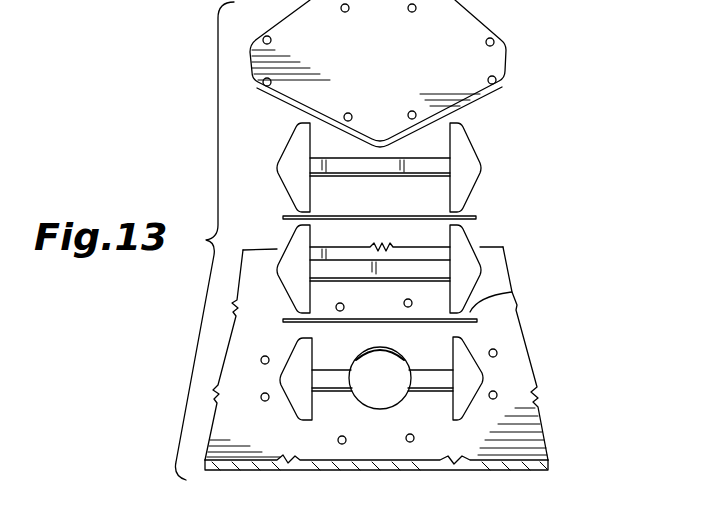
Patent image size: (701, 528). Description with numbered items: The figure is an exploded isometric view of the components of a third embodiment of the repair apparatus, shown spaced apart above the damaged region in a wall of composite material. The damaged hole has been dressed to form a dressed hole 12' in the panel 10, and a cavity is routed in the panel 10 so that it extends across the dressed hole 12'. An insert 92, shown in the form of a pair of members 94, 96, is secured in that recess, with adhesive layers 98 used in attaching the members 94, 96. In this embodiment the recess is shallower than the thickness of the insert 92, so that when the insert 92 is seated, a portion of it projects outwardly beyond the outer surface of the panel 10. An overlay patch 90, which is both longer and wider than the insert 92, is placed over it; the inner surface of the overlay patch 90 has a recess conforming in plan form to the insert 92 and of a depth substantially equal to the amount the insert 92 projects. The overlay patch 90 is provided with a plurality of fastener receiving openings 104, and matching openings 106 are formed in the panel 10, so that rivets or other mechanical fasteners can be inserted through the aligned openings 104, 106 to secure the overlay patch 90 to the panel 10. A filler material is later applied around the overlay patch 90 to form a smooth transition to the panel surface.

The panel 10 is at (522, 437).
The dressed hole 12' is at (381, 428).
The overlay patch 90 is at (507, 60).
The insert 92 is at (518, 165).
The member 94 is at (460, 143).
The member 96 is at (470, 260).
The adhesive layer 98 is at (470, 212).
The fastener receiving opening 104 is at (345, 12).
The matching opening 106 is at (342, 444).